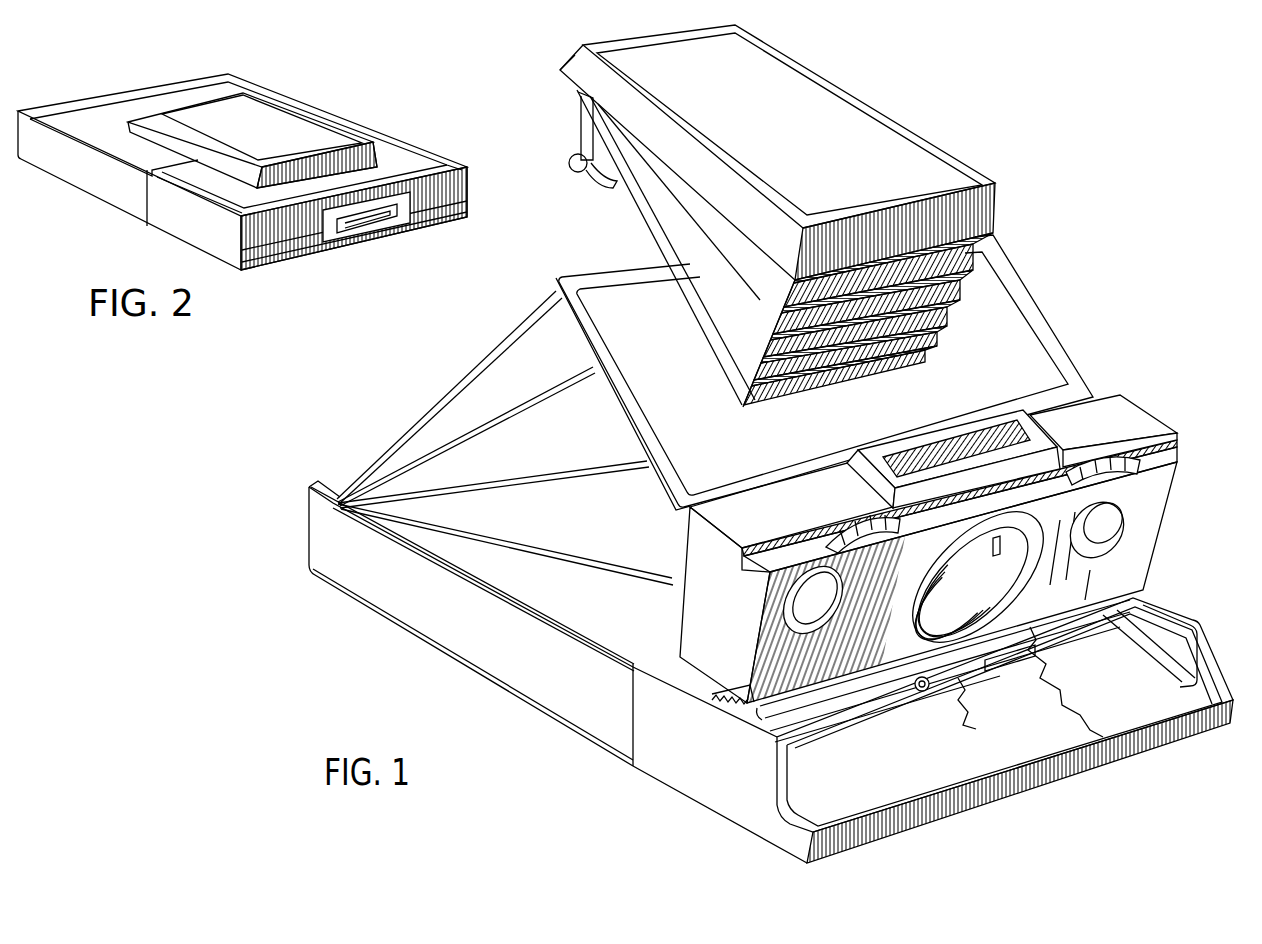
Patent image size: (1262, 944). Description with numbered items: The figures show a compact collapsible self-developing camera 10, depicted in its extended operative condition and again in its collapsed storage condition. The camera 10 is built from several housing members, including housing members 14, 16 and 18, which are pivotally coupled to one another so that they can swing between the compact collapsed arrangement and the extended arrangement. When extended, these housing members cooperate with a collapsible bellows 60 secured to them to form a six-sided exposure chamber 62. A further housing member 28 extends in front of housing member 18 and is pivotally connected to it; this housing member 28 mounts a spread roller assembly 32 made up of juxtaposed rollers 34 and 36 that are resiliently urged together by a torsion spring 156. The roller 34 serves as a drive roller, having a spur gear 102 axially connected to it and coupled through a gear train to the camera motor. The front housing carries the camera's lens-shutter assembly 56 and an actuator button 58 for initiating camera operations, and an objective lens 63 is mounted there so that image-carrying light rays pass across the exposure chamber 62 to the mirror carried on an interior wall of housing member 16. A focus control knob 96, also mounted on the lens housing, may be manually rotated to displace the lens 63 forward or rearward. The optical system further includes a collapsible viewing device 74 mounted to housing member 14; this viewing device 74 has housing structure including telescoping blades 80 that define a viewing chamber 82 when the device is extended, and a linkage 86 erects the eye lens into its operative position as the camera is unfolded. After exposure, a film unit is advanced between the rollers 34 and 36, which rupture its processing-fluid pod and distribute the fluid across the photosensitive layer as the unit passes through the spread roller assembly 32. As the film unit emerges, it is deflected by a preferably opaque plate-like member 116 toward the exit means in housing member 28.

In FIG. 2, the self-developing camera 10 is at (352, 111).
In FIG. 1, the self-developing camera 10 is at (1002, 174).
In FIG. 2, the housing member 14 is at (202, 183).
In FIG. 1, the housing member 14 is at (647, 393).
In FIG. 2, the housing member 16 is at (106, 106).
In FIG. 1, the housing member 16 is at (455, 385).
In FIG. 2, the housing member 18 is at (105, 203).
In FIG. 1, the housing member 18 is at (503, 690).
In FIG. 2, the housing member 28 is at (240, 270).
In FIG. 1, the housing member 28 is at (833, 850).
In FIG. 1, the spread roller assembly 32 is at (1016, 671).
In FIG. 1, the roller 34 is at (823, 697).
In FIG. 1, the roller 36 is at (960, 690).
In FIG. 2, the lens-shutter assembly 56 is at (458, 187).
In FIG. 1, the lens-shutter assembly 56 is at (1160, 498).
In FIG. 1, the actuator button 58 is at (823, 615).
In FIG. 1, the collapsible bellows 60 is at (512, 358).
In FIG. 1, the exposure chamber 62 is at (428, 418).
In FIG. 1, the objective lens 63 is at (977, 578).
In FIG. 2, the collapsible viewing device 74 is at (277, 118).
In FIG. 1, the collapsible viewing device 74 is at (808, 143).
In FIG. 1, the telescoping blades 80 is at (717, 298).
In FIG. 1, the viewing chamber 82 is at (985, 262).
In FIG. 1, the linkage 86 is at (626, 205).
In FIG. 1, the focus control knob 96 is at (858, 520).
In FIG. 1, the spur gear 102 is at (717, 697).
In FIG. 1, the opaque plate-like member 116 is at (1112, 685).
In FIG. 1, the torsion spring 156 is at (932, 708).